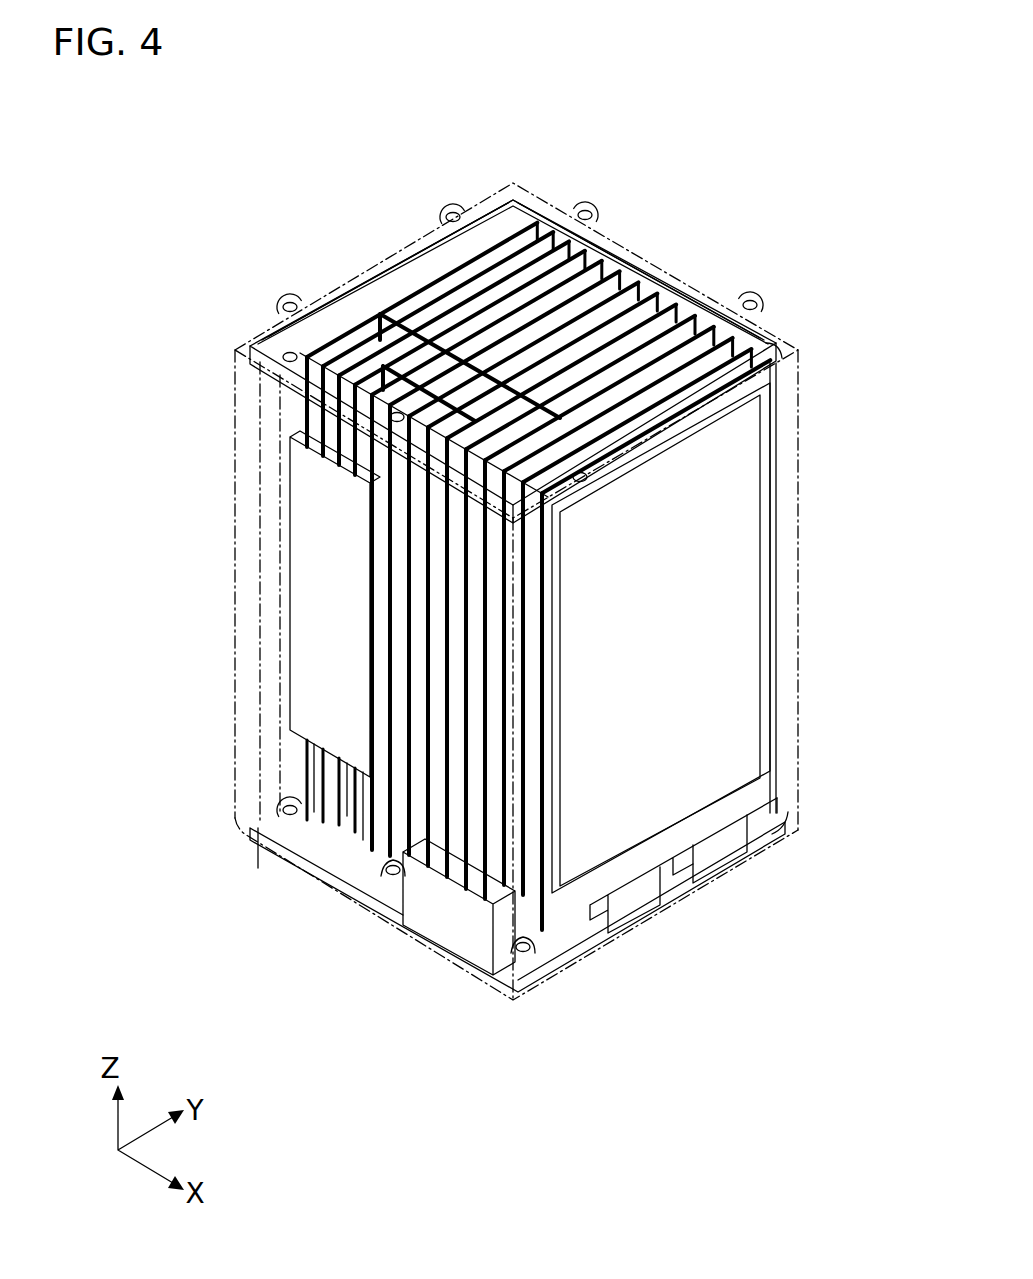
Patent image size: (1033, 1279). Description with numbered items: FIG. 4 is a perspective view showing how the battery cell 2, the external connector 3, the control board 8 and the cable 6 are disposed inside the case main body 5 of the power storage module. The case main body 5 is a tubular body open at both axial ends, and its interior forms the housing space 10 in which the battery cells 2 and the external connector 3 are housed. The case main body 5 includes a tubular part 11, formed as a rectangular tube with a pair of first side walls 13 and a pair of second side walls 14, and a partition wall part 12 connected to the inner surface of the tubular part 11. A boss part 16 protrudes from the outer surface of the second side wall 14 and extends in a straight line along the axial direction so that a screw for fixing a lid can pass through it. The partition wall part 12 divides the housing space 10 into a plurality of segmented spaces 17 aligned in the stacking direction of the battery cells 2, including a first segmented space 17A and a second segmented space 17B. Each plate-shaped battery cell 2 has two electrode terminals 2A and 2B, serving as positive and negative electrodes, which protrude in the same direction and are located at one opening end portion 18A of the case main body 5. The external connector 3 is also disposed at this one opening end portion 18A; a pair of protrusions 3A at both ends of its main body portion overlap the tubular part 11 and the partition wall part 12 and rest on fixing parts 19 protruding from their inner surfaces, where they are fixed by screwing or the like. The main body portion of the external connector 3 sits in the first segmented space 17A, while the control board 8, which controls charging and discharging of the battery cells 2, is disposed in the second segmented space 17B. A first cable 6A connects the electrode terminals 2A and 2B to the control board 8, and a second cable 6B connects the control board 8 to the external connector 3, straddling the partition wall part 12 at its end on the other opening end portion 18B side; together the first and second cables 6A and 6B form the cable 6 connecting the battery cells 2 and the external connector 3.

The battery cell 2 is at (457, 292).
The electrode terminal 2A is at (635, 905).
The electrode terminal 2B is at (720, 855).
The external connector 3 is at (427, 930).
The protrusion 3A is at (390, 873).
The case main body 5 is at (812, 558).
The cable 6 is at (457, 662).
The first cable 6A is at (302, 772).
The second cable 6B is at (612, 990).
The control board 8 is at (320, 550).
The housing space 10 is at (279, 325).
The tubular part 11 is at (235, 350).
The partition wall part 12 is at (543, 333).
The first side wall 13 is at (383, 243).
The second side wall 14 is at (652, 262).
The boss part 16 is at (587, 208).
The segmented space 17 is at (582, 240).
The first segmented space 17A is at (639, 270).
The second segmented space 17B is at (388, 270).
The one opening end portion 18A is at (798, 820).
The other opening end portion 18B is at (800, 350).
The fixing part 19 is at (373, 897).